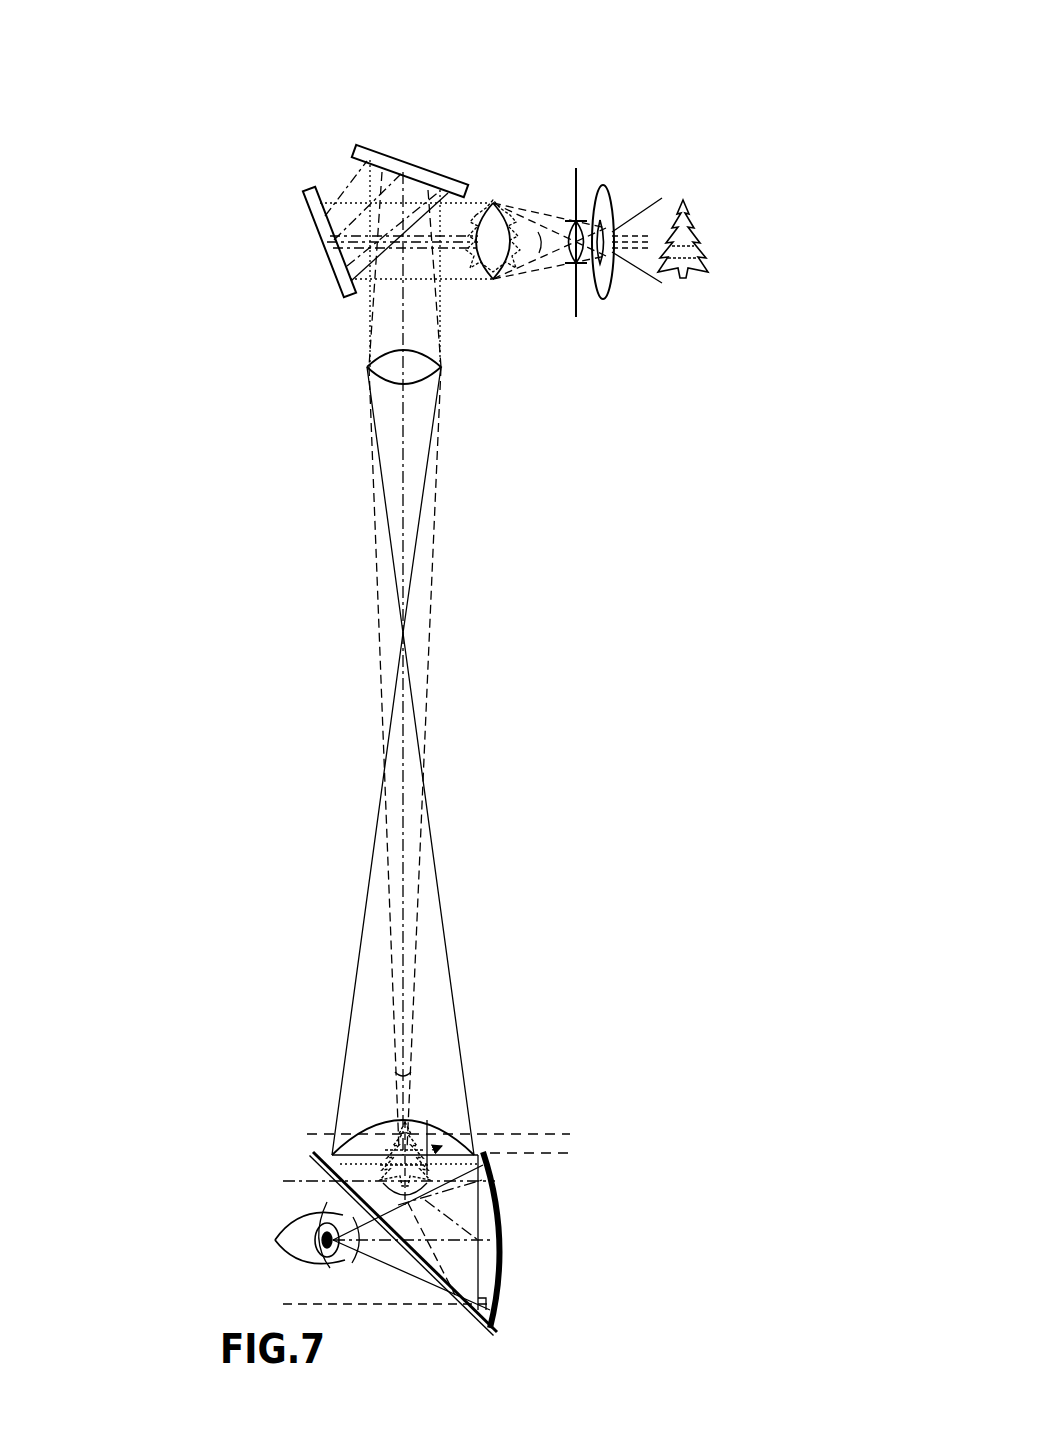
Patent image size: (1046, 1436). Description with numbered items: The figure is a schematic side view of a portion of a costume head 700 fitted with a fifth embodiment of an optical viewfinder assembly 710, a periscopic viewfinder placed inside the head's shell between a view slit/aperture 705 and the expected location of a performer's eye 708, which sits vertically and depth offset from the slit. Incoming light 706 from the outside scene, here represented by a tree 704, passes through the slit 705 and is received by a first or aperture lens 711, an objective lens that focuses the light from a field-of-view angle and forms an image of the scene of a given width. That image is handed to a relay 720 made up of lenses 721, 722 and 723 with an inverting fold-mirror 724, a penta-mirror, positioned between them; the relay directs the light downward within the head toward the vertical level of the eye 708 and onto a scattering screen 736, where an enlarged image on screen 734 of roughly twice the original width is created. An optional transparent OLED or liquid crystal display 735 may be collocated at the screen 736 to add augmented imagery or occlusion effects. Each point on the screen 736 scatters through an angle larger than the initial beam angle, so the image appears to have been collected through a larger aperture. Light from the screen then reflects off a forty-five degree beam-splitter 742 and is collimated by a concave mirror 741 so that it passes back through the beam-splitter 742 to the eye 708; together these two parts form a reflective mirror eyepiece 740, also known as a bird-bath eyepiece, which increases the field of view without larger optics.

The costume head 700 is at (668, 101).
The object (tree) 704 is at (716, 278).
The view slit/aperture 705 is at (597, 265).
The incoming light 706 is at (606, 194).
The performer's eye 708 is at (305, 1250).
The optical viewfinder assembly 710 is at (595, 102).
The aperture lens 711 is at (551, 274).
The relay 720 is at (223, 1045).
The relay lens 721 is at (497, 197).
The relay lens 722 is at (359, 364).
The relay lens 723 is at (359, 1121).
The inverting fold-mirror 724 is at (307, 209).
The image on screen 734 is at (443, 1114).
The transparent OLED or liquid crystal display 735 is at (483, 1114).
The scattering screen 736 is at (581, 1162).
The mirror eyepiece 740 is at (622, 1368).
The concave mirror 741 is at (500, 1232).
The beam-splitter 742 is at (470, 1305).